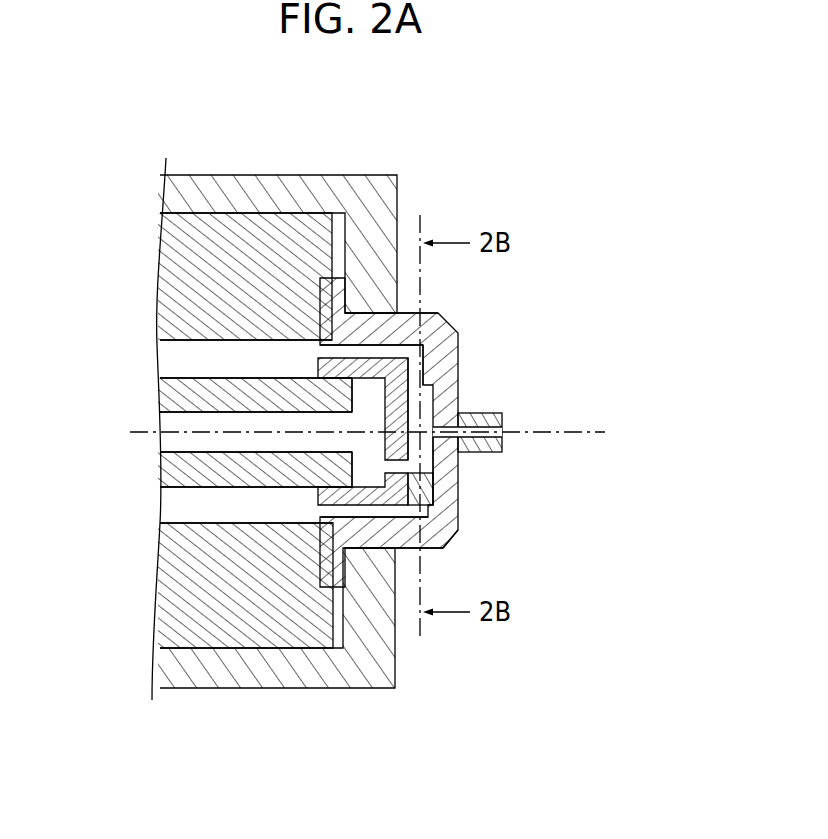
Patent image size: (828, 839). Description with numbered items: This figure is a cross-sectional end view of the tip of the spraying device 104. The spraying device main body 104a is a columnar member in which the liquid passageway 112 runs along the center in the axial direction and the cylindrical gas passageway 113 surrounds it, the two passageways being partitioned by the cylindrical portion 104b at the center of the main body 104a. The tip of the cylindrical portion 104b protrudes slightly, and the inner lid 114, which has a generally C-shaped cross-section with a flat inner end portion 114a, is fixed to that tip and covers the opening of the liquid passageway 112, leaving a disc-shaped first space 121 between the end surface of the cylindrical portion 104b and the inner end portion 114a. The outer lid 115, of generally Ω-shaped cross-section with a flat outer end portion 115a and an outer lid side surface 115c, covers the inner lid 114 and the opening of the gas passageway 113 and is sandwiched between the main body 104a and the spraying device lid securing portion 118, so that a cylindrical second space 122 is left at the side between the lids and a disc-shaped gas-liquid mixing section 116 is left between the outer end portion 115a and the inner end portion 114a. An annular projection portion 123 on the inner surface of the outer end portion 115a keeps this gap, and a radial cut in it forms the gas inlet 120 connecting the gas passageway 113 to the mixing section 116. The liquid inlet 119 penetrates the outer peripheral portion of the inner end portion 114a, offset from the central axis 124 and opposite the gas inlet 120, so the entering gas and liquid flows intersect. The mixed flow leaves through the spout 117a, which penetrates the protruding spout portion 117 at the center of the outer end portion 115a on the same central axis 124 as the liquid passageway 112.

The spraying device 104 is at (232, 160).
The spraying device main body 104a is at (210, 258).
The cylindrical portion 104b is at (210, 400).
The liquid passageway 112 is at (210, 440).
The gas passageway 113 is at (210, 358).
The inner lid 114 is at (355, 495).
The inner end portion 114a is at (412, 395).
The outer lid 115 is at (375, 533).
The outer end portion 115a is at (450, 467).
The outer lid side surface 115c is at (423, 313).
The gas-liquid mixing section 116 is at (430, 466).
The spout portion 117 is at (477, 455).
The spout 117a is at (503, 423).
The spraying device lid securing portion 118 is at (303, 190).
The liquid inlet 119 is at (408, 556).
The gas inlet 120 is at (413, 365).
The first space 121 is at (360, 353).
The second space 122 is at (372, 393).
The annular projection portion 123 is at (440, 549).
The central axis 124 is at (605, 433).